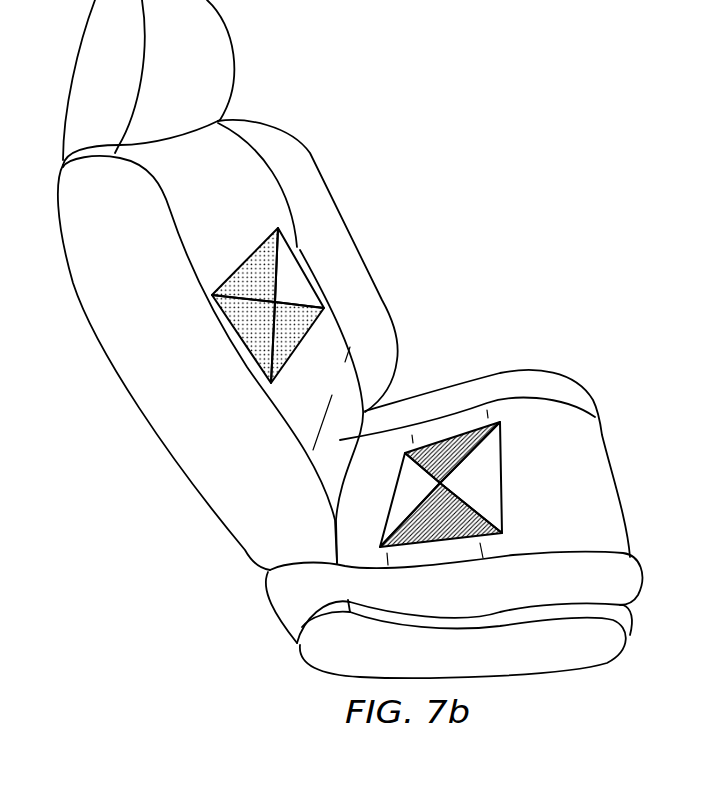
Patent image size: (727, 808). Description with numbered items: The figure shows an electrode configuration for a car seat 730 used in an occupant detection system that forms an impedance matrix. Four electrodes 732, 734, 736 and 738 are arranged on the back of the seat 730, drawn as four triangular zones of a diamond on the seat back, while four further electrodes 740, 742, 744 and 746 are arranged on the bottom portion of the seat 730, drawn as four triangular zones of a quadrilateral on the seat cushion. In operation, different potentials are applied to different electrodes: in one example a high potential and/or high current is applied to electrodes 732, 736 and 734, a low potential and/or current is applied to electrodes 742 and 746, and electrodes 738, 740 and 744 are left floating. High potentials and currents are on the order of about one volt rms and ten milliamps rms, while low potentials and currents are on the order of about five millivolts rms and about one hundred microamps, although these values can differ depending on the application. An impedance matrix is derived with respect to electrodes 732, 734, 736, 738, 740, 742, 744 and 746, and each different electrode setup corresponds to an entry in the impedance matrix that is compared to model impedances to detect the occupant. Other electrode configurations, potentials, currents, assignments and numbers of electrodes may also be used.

The car seat 730 is at (307, 153).
The electrode 732 is at (250, 263).
The electrode 734 is at (257, 338).
The electrode 736 is at (293, 335).
The electrode 738 is at (295, 278).
The electrode 740 is at (407, 498).
The electrode 742 is at (428, 457).
The electrode 744 is at (487, 492).
The electrode 746 is at (438, 532).